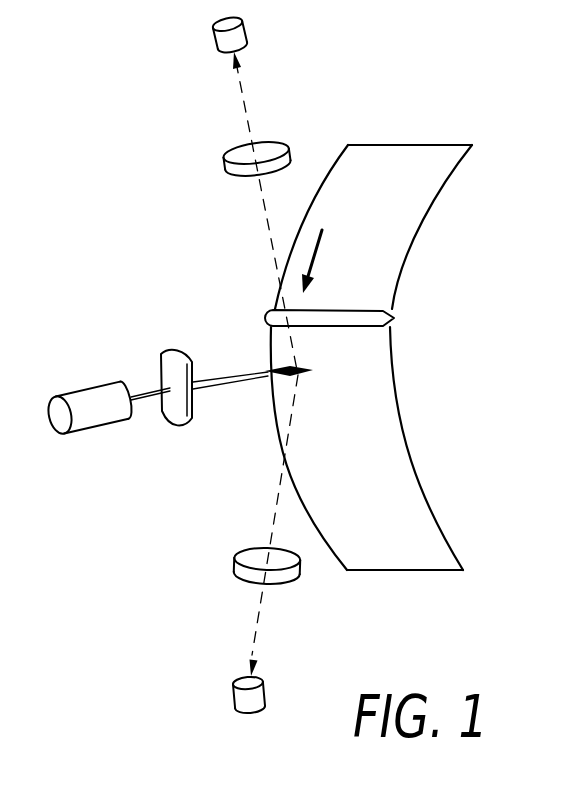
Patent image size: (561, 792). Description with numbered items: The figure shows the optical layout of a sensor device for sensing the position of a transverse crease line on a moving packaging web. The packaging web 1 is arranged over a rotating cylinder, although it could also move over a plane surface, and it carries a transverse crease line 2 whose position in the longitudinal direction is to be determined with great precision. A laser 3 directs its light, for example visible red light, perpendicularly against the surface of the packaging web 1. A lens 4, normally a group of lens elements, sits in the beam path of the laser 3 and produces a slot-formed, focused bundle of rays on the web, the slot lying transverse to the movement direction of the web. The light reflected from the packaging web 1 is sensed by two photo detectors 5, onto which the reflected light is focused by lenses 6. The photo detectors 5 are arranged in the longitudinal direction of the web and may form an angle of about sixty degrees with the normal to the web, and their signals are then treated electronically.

The packaging web 1 is at (407, 226).
The transverse crease line 2 is at (383, 320).
The laser 3 is at (90, 393).
The lens 4 is at (163, 372).
The photo detectors 5 is at (213, 30).
The lenses 6 is at (230, 155).